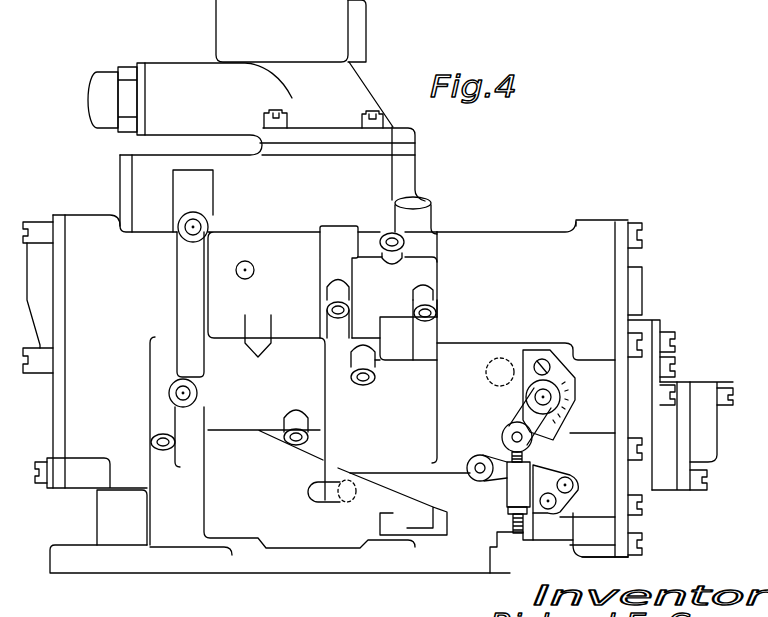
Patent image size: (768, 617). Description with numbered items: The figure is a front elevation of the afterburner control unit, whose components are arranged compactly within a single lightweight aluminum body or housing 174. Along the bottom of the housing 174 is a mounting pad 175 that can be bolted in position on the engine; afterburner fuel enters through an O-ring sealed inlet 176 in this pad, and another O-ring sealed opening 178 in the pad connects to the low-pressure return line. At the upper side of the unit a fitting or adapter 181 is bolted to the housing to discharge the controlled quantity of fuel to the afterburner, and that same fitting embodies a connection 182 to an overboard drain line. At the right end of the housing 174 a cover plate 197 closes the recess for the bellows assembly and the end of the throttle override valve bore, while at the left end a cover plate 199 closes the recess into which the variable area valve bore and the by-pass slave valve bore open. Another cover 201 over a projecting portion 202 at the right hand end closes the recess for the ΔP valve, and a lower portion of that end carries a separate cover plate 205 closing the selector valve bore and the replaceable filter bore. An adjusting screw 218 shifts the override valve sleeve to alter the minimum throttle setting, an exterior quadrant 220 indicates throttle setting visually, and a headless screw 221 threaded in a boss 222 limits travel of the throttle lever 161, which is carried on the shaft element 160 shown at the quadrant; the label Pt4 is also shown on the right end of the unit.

The fitting or adapter 181 is at (230, 13).
The connection to overboard drain line 182 is at (139, 80).
The left end cover plate 199 is at (60, 217).
The right end cover plate 197 is at (622, 224).
The body or housing 174 is at (422, 243).
The port Pt4 is at (636, 290).
The adjusting screw 218 is at (668, 366).
The projecting portion 202 is at (656, 482).
The cover 201 is at (681, 487).
The separate cover plate 205 is at (619, 548).
The exterior quadrant 220 is at (563, 402).
The throttle shaft 160 is at (518, 404).
The throttle lever 161 is at (518, 415).
The boss 222 is at (515, 497).
The headless screw 221 is at (510, 524).
The mounting pad 175 is at (73, 558).
The O-ring sealed opening 178 is at (147, 553).
The inlet 176 is at (252, 550).